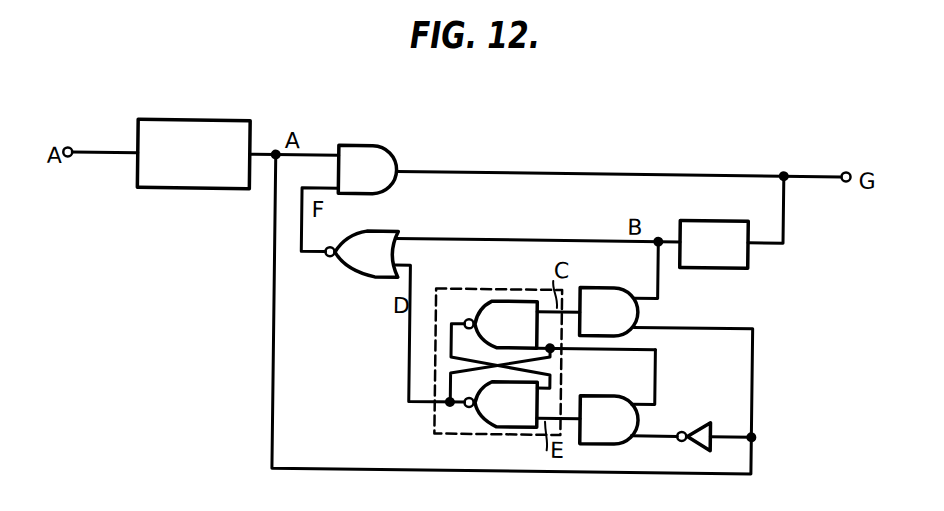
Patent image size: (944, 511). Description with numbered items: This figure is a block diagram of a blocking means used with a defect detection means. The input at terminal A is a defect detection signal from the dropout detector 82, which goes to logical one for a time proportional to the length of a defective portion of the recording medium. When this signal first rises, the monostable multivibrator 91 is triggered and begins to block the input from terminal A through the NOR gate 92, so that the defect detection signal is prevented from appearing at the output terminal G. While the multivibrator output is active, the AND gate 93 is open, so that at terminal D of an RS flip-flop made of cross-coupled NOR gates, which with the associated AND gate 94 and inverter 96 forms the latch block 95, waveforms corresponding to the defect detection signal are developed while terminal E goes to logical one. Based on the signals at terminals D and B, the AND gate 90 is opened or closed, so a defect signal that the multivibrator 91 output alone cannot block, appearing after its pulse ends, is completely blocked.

The dropout detector 82 is at (235, 123).
The AND gate 90 is at (385, 146).
The monostable multivibrator 91 is at (735, 265).
The NOR gate 92 is at (388, 229).
The AND gate 93 is at (613, 285).
The AND gate 94 is at (594, 396).
The flip-flop (cross-coupled NOR gates) 95 is at (456, 288).
The inverter 96 is at (706, 419).